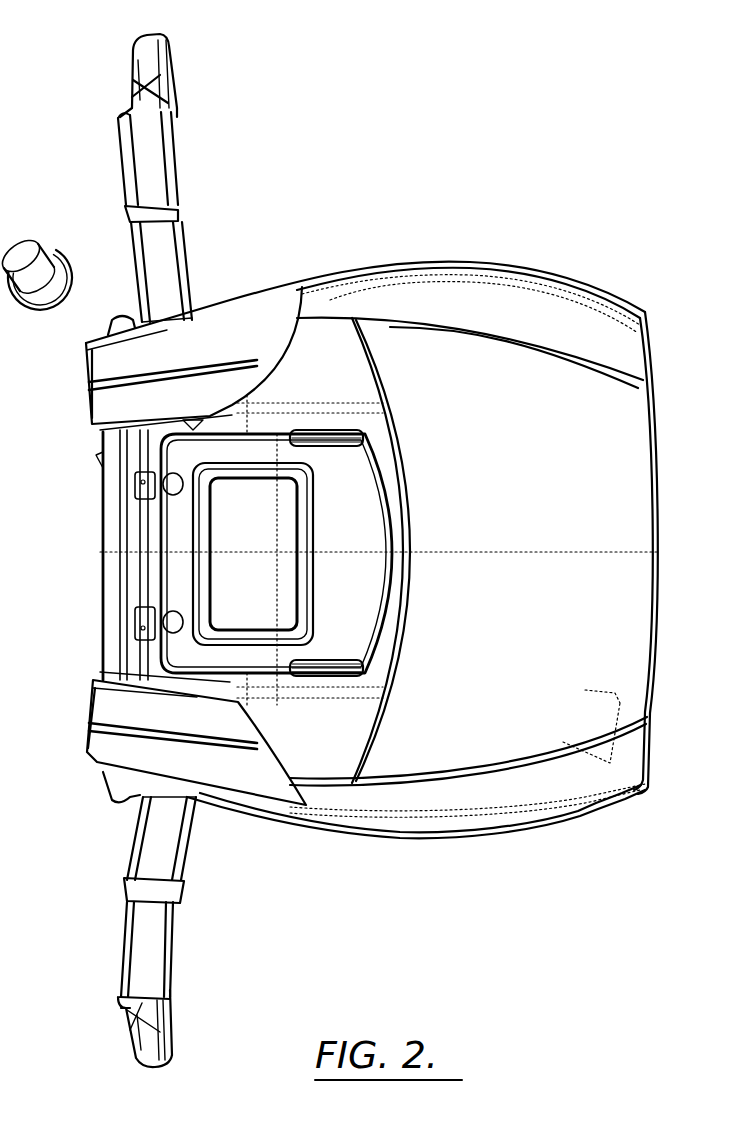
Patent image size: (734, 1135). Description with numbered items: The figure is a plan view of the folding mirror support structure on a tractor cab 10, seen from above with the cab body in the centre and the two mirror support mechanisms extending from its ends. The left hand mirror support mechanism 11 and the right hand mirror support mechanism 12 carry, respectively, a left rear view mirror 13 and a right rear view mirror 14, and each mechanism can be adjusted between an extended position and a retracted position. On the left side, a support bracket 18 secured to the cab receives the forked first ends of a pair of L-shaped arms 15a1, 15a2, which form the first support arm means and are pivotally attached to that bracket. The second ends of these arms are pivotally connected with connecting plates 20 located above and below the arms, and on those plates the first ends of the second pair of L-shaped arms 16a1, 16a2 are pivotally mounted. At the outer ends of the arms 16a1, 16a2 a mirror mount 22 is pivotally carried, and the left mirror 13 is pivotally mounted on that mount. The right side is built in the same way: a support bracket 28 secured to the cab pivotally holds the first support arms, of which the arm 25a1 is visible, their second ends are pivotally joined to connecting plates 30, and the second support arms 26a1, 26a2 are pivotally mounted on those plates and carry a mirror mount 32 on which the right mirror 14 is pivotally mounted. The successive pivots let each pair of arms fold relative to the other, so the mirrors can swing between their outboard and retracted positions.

The tractor cab 10 is at (372, 507).
The left hand mirror support mechanism 11 is at (177, 929).
The right hand mirror support mechanism 12 is at (155, 171).
The left rear view mirror 13 is at (148, 1036).
The right rear view mirror 14 is at (162, 45).
The L-shaped arm 15a1 is at (140, 832).
The L-shaped arm 15a2 is at (190, 855).
The L-shaped arm 16a1 is at (130, 948).
The L-shaped arm 16a2 is at (170, 973).
The support bracket 18 is at (200, 813).
The connecting plates 20 is at (152, 890).
The mirror mount 22 is at (127, 1000).
The L-shaped arm 25a1 is at (188, 224).
The L-shaped arm 26a1 is at (126, 158).
The L-shaped arm 26a2 is at (173, 152).
The support bracket 28 is at (165, 312).
The connecting plates 30 is at (150, 218).
The mirror mount 32 is at (140, 98).